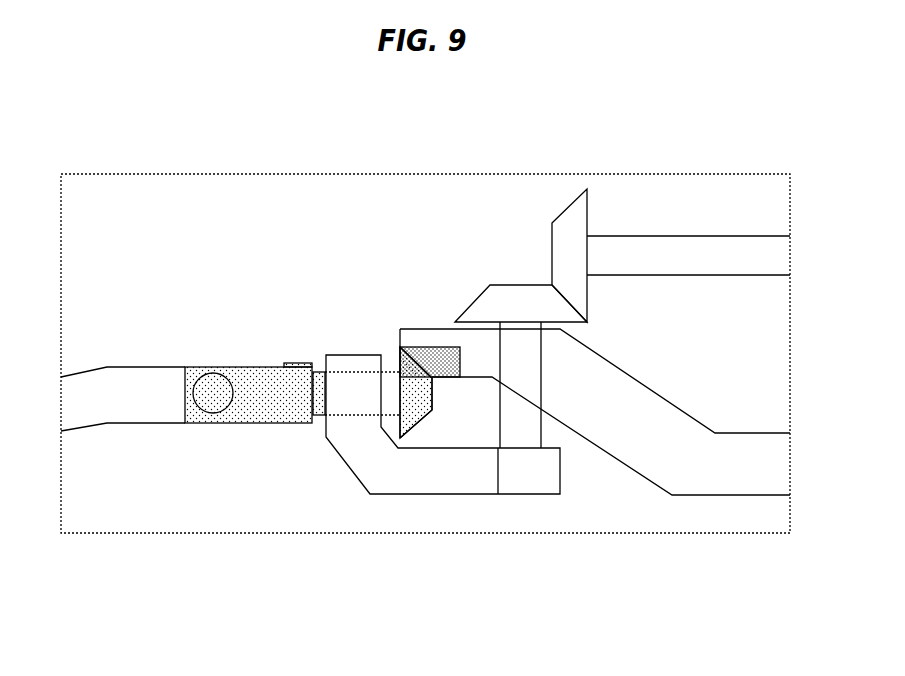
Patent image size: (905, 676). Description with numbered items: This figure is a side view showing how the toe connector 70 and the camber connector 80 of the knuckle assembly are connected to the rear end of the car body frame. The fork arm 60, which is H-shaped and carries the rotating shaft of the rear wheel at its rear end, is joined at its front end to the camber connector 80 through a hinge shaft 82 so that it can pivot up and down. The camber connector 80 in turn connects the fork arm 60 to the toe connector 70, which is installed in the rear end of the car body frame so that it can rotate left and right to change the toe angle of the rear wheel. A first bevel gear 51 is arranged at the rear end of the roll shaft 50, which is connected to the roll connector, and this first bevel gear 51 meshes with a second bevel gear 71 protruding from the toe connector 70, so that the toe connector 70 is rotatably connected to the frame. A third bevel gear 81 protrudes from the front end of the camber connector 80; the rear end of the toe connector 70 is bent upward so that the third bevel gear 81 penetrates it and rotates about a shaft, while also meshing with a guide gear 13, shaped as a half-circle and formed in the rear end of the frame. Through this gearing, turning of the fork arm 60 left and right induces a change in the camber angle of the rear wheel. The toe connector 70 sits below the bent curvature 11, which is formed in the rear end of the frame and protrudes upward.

The bent curvature 11 is at (573, 390).
The guide gear 13 is at (435, 355).
The roll shaft 50 is at (690, 260).
The first bevel gear 51 is at (567, 232).
The fork arm 60 is at (123, 407).
The toe connector 70 is at (425, 473).
The second bevel gear 71 is at (490, 303).
The camber connector 80 is at (267, 395).
The third bevel gear 81 is at (407, 372).
The hinge shaft 82 is at (215, 397).